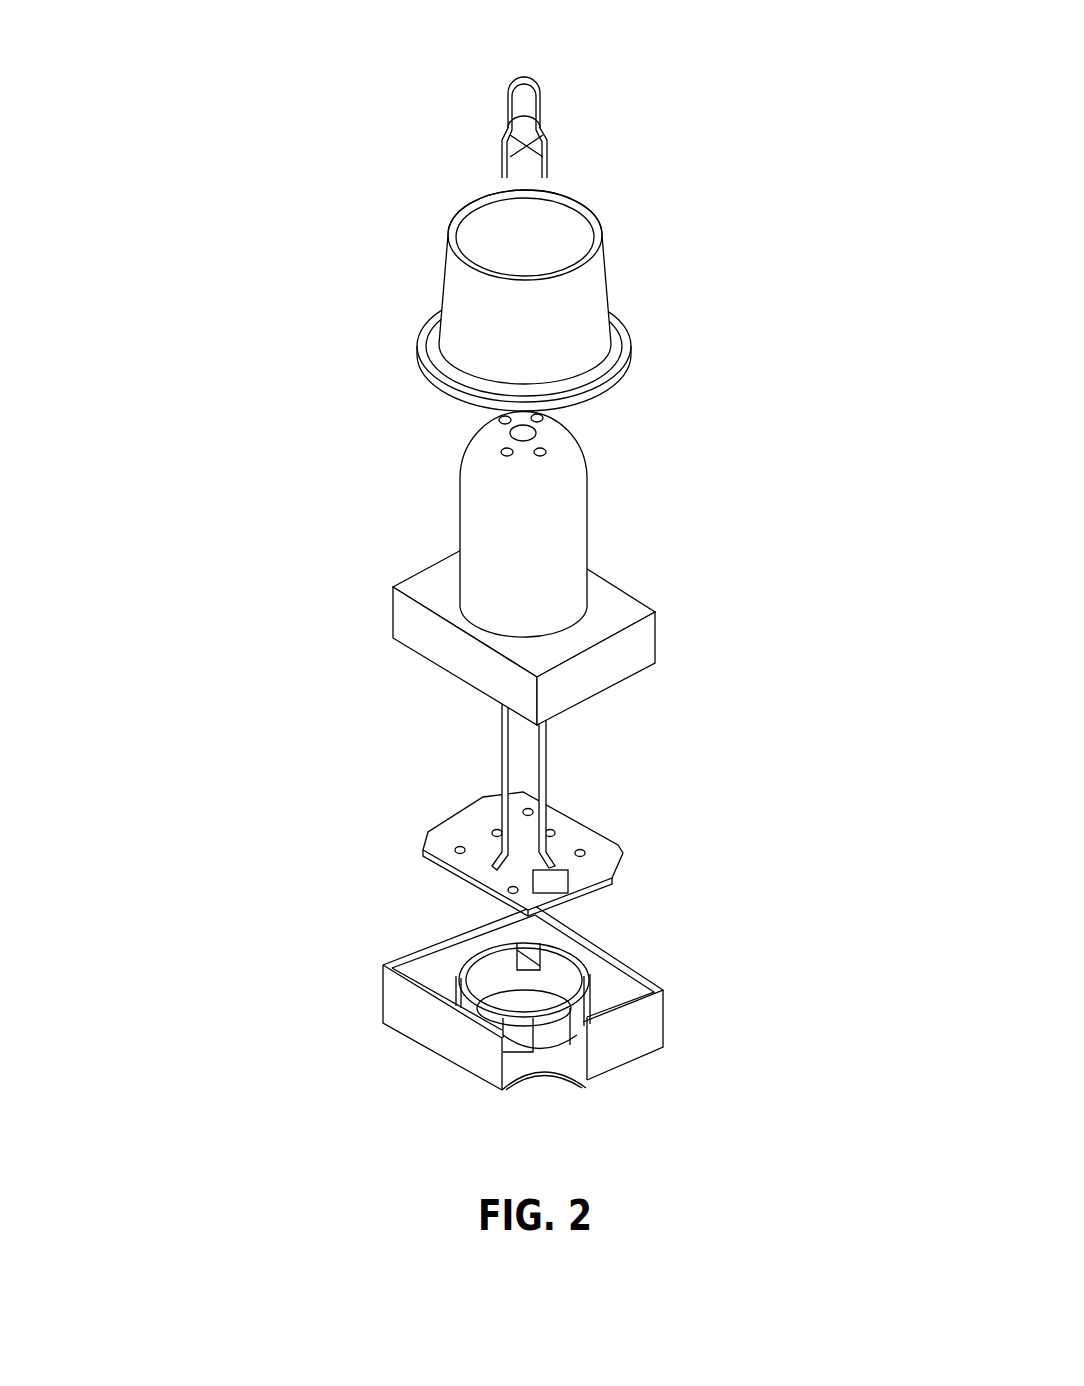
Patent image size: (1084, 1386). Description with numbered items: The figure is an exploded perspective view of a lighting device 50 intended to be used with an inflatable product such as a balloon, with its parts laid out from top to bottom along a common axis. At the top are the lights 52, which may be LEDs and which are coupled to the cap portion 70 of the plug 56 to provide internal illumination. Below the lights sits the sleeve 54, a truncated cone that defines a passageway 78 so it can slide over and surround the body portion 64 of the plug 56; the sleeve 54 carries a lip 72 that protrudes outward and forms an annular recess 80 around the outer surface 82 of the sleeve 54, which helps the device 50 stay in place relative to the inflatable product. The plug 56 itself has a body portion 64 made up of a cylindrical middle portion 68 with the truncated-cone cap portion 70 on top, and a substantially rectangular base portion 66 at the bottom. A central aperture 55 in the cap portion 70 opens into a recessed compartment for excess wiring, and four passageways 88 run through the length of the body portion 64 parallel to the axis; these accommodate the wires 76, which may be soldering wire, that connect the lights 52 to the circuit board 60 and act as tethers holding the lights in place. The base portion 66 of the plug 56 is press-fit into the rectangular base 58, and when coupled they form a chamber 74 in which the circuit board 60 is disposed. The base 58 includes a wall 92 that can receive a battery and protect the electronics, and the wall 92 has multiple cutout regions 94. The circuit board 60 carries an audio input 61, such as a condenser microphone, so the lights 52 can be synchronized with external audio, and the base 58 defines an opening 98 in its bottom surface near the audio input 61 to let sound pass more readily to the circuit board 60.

The lighting device 50 is at (287, 1018).
The light 52 is at (582, 99).
The sleeve 54 is at (523, 265).
The central aperture 55 is at (543, 430).
The plug 56 is at (561, 606).
The base 58 is at (545, 1067).
The circuit board 60 is at (668, 874).
The audio input 61 is at (568, 883).
The body portion 64 is at (573, 489).
The base portion 66 is at (693, 625).
The middle portion 68 is at (488, 552).
The cap portion 70 is at (505, 403).
The lip 72 is at (523, 303).
The chamber 74 is at (608, 990).
The wires 76 is at (477, 733).
The passageway 78 is at (540, 230).
The annular recess 80 is at (428, 327).
The outer surface 82 is at (582, 312).
The passageways 88 is at (562, 451).
The wall 92 is at (479, 985).
The cutout regions 94 is at (527, 947).
The opening 98 is at (558, 1108).